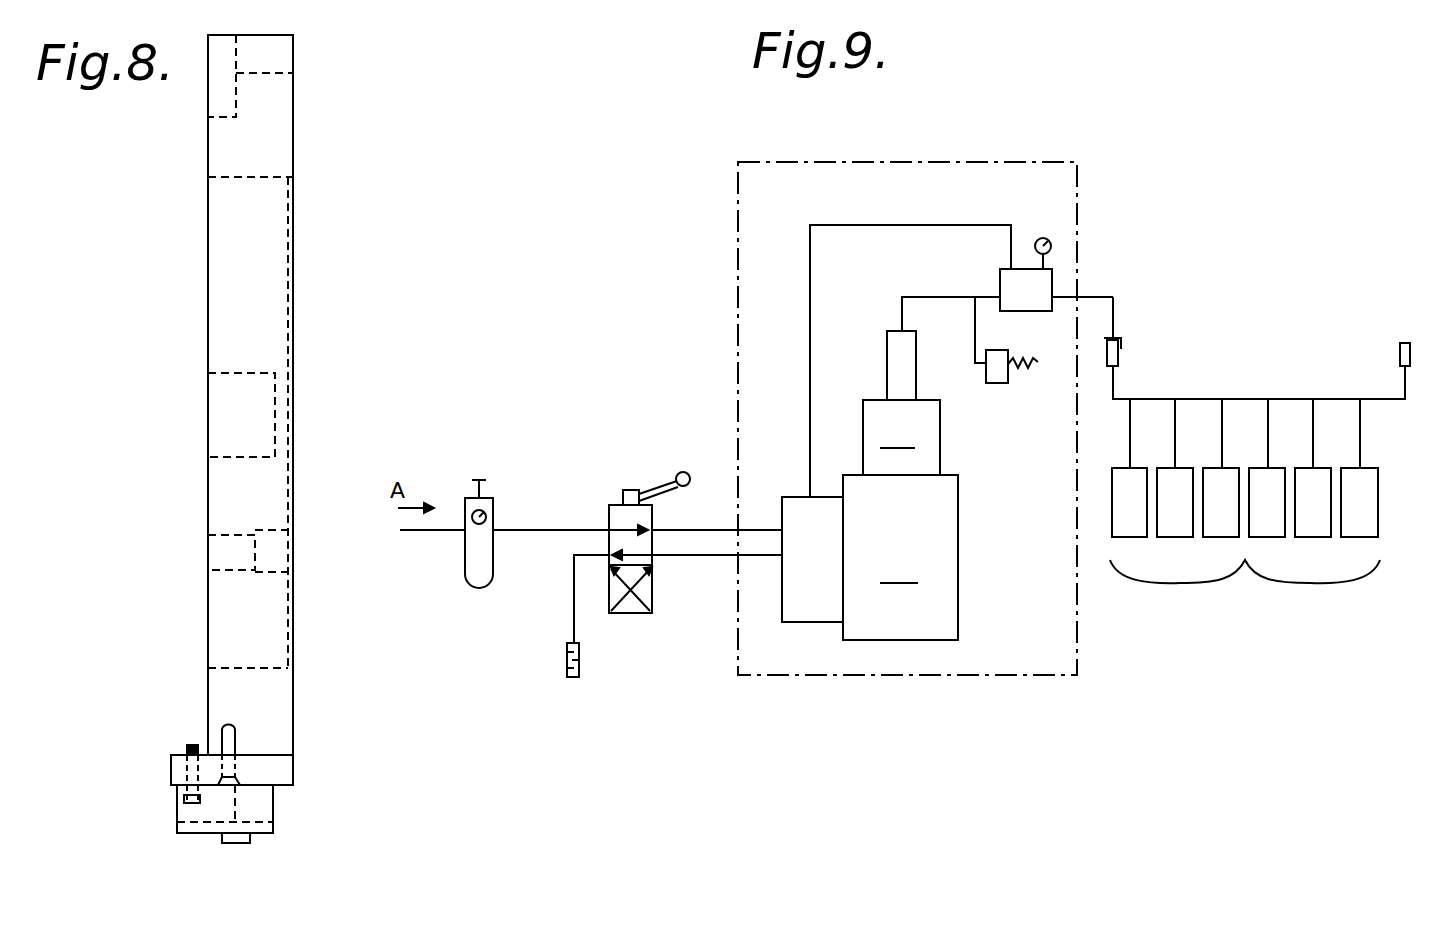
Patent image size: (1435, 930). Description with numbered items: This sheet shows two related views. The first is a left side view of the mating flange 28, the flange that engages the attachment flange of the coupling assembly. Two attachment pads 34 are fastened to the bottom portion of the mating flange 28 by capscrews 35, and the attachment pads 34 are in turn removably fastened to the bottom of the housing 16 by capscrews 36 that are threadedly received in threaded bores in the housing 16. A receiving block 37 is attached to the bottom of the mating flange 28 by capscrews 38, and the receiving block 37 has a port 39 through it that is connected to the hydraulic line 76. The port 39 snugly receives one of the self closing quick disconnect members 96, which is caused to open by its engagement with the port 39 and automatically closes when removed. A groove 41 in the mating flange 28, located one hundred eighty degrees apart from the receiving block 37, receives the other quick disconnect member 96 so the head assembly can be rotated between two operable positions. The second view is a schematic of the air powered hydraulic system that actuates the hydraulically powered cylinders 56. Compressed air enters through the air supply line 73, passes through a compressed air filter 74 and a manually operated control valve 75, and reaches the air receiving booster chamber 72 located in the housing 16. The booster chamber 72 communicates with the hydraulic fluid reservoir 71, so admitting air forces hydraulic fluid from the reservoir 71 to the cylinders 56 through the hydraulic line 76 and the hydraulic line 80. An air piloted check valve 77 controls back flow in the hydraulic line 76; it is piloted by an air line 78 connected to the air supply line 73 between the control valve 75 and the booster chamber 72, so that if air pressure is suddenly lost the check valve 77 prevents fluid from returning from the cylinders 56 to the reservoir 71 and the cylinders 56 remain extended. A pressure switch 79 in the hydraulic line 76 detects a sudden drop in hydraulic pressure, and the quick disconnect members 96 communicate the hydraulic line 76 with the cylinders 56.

In FIG. 9, the housing 16 is at (1077, 197).
In FIG. 8, the mating flange 28 is at (268, 150).
In FIG. 8, the attachment pads 34 is at (288, 768).
In FIG. 8, the capscrews 35 is at (236, 735).
In FIG. 8, the capscrews 36 is at (192, 745).
In FIG. 8, the receiving block 37 is at (265, 793).
In FIG. 8, the capscrews 38 is at (250, 841).
In FIG. 8, the port 39 is at (240, 823).
In FIG. 8, the groove 41 is at (253, 73).
In FIG. 9, the hydraulically powered cylinders 56 is at (1245, 549).
In FIG. 9, the hydraulic fluid reservoir 71 is at (901, 403).
In FIG. 9, the air receiving booster chamber 72 is at (870, 557).
In FIG. 9, the air supply line 73 is at (430, 532).
In FIG. 9, the compressed air filter 74 is at (488, 572).
In FIG. 9, the control valve 75 is at (612, 517).
In FIG. 9, the hydraulic line 76 is at (952, 298).
In FIG. 9, the air piloted check valve 77 is at (1033, 284).
In FIG. 9, the air line 78 is at (885, 225).
In FIG. 9, the pressure switch 79 is at (993, 380).
In FIG. 9, the hydraulic line 80 is at (1275, 398).
In FIG. 9, the self closing quick disconnect member 96 is at (1118, 362).